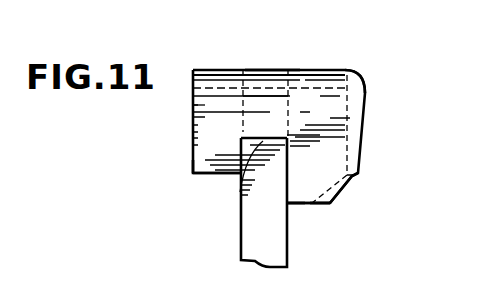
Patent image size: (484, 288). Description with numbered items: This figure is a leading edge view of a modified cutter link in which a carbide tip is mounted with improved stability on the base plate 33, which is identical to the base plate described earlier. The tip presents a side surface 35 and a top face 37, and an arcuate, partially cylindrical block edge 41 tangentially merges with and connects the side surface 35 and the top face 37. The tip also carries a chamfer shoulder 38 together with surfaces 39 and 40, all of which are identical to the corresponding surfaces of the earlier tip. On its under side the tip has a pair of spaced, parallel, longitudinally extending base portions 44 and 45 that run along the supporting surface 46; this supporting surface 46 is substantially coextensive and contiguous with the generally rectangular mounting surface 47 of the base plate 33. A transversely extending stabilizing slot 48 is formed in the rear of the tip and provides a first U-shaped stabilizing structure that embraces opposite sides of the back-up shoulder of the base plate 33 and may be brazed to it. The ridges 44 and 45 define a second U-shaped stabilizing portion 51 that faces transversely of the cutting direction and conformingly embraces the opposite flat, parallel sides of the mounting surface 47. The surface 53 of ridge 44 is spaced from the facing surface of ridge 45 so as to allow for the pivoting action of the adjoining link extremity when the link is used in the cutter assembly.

The base plate 33 is at (272, 231).
The side surface 35 is at (366, 135).
The top face 37 is at (285, 70).
The chamfer shoulder 38 is at (342, 189).
The surface 39 is at (318, 205).
The surface 40 is at (305, 203).
The arcuate block edge 41 is at (353, 78).
The base portion 44 is at (200, 175).
The base portion 45 is at (297, 204).
The supporting surface 46 is at (268, 134).
The mounting surface 47 is at (240, 188).
The stabilizing slot 48 is at (262, 70).
The second U-shaped stabilizing portion 51 is at (247, 132).
The surface 53 is at (201, 162).